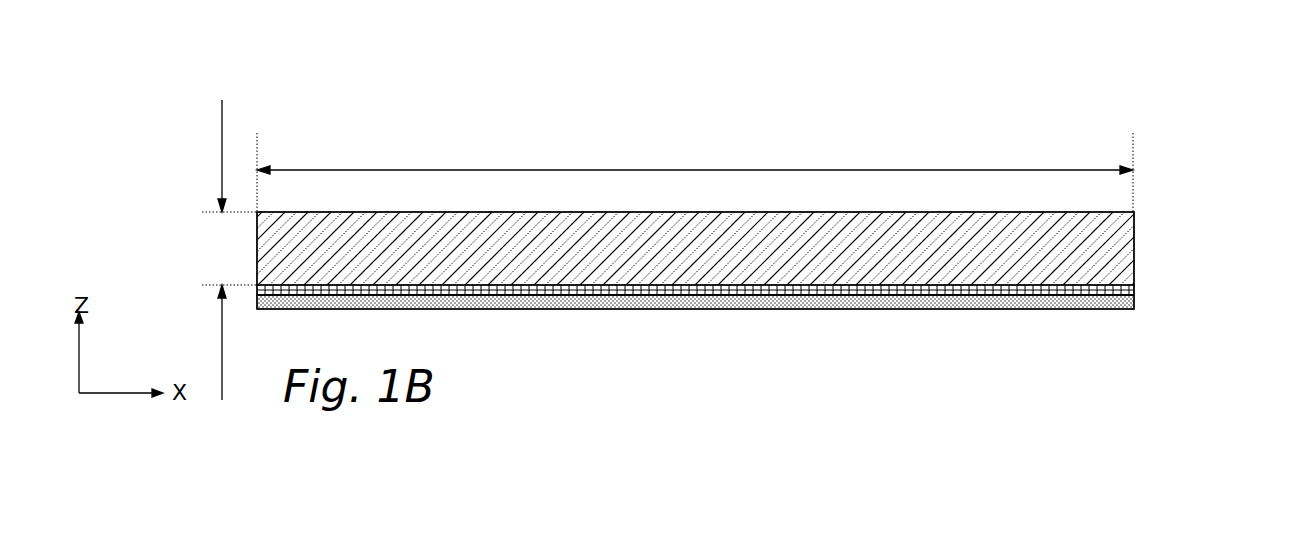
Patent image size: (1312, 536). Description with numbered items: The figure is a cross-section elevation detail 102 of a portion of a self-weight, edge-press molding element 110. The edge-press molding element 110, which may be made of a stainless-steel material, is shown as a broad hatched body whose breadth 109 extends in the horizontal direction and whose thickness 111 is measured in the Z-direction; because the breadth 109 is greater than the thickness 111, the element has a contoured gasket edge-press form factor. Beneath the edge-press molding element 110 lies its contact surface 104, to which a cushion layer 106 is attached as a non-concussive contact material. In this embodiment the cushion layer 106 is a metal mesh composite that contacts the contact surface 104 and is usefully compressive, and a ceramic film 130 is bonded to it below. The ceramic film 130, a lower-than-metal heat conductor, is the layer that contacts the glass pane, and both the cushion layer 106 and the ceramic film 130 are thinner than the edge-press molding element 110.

The cross-section elevation detail 102 is at (337, 110).
The contact surface 104 is at (700, 287).
The cushion layer 106 is at (1128, 296).
The breadth 109 is at (639, 170).
The edge-press molding element 110 is at (1125, 256).
The thickness 111 is at (223, 177).
The ceramic film 130 is at (832, 298).